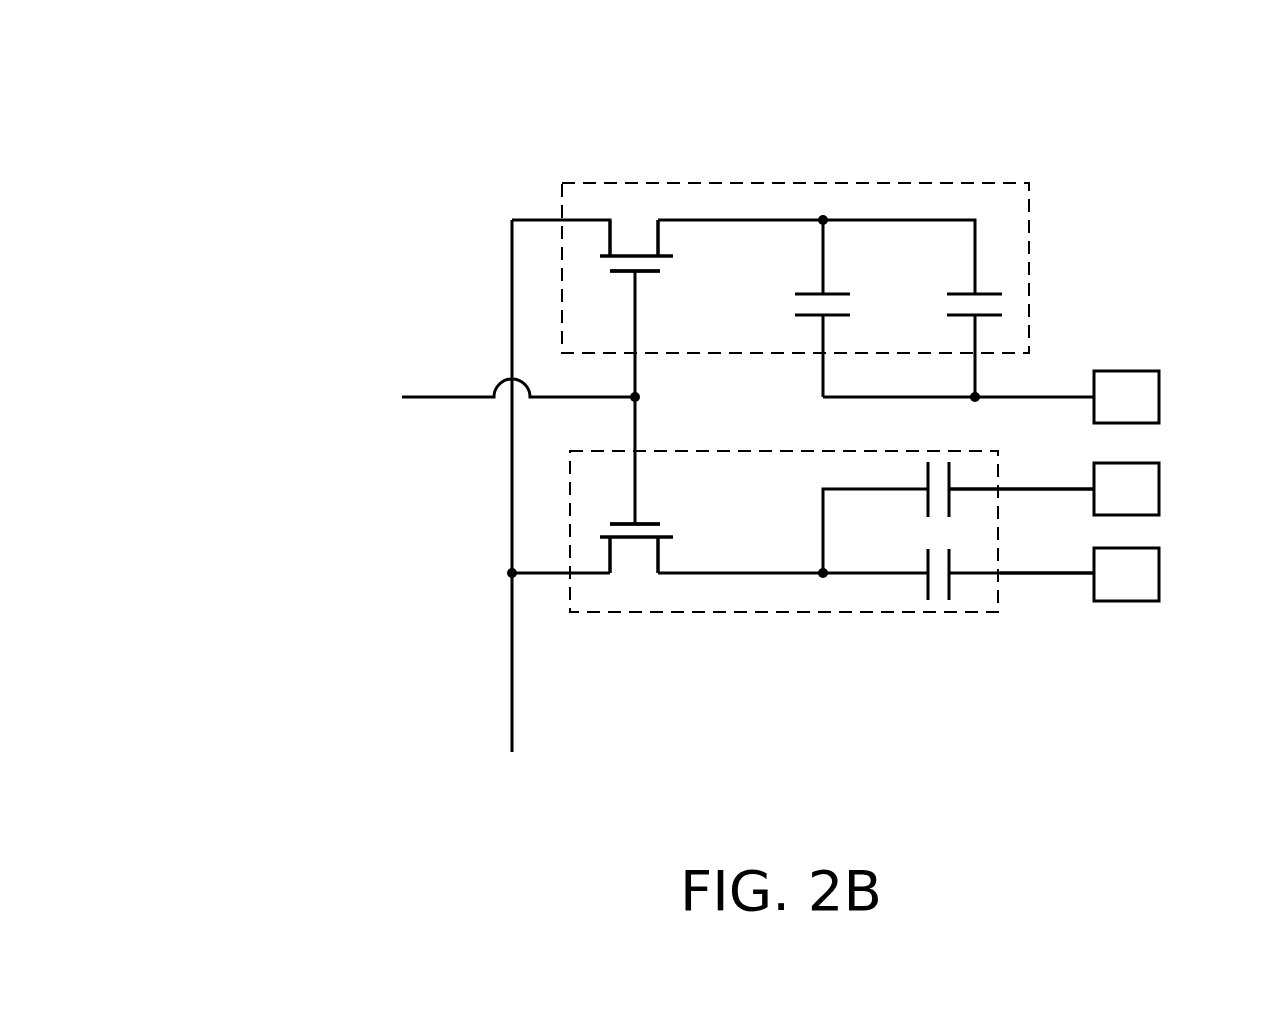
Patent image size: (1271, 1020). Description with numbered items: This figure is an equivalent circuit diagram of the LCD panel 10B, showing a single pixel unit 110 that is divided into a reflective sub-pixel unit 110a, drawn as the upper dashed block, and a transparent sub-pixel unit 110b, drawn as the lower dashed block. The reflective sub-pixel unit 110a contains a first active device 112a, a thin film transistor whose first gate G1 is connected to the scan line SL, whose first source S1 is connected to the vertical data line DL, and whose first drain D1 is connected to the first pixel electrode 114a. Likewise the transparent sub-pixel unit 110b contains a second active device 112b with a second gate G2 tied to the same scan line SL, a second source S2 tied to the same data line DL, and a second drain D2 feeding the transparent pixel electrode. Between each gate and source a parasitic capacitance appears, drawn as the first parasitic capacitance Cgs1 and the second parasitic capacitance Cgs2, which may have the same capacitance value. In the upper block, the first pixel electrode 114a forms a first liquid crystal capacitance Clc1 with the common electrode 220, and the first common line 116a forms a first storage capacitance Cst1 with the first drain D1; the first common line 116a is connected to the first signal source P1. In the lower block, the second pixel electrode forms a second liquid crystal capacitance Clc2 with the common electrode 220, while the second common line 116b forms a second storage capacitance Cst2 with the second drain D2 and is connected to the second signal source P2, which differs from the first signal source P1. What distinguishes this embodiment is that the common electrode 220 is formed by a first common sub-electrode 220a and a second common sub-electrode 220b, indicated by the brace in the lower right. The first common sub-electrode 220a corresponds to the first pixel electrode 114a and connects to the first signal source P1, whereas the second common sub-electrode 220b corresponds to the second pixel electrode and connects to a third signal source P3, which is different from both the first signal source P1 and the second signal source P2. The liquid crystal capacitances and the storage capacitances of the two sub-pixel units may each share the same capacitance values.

The LCD panel 10B is at (1183, 806).
The pixel unit 110 is at (633, 397).
The reflective sub-pixel unit 110a is at (582, 356).
The transparent sub-pixel unit 110b is at (578, 451).
The first active device 112a is at (667, 210).
The second active device 112b is at (667, 587).
The first pixel electrode 114a is at (858, 219).
The first common line 116a is at (981, 337).
The second common line 116b is at (1078, 577).
The common electrode 220 is at (1107, 704).
The first common sub-electrode 220a is at (948, 401).
The second common sub-electrode 220b is at (1036, 491).
The scan line SL is at (436, 394).
The data line DL is at (510, 681).
The first source S1 is at (613, 242).
The first drain D1 is at (656, 243).
The first gate G1 is at (640, 305).
The second source S2 is at (612, 560).
The second drain D2 is at (657, 560).
The second gate G2 is at (642, 493).
The first parasitic capacitance Cgs1 is at (594, 259).
The second parasitic capacitance Cgs2 is at (599, 526).
The first liquid crystal capacitance Clc1 is at (791, 301).
The second liquid crystal capacitance Clc2 is at (934, 521).
The first storage capacitance Cst1 is at (1007, 302).
The second storage capacitance Cst2 is at (940, 606).
The first signal source P1 is at (1159, 397).
The second signal source P2 is at (1159, 573).
The third signal source P3 is at (1159, 489).